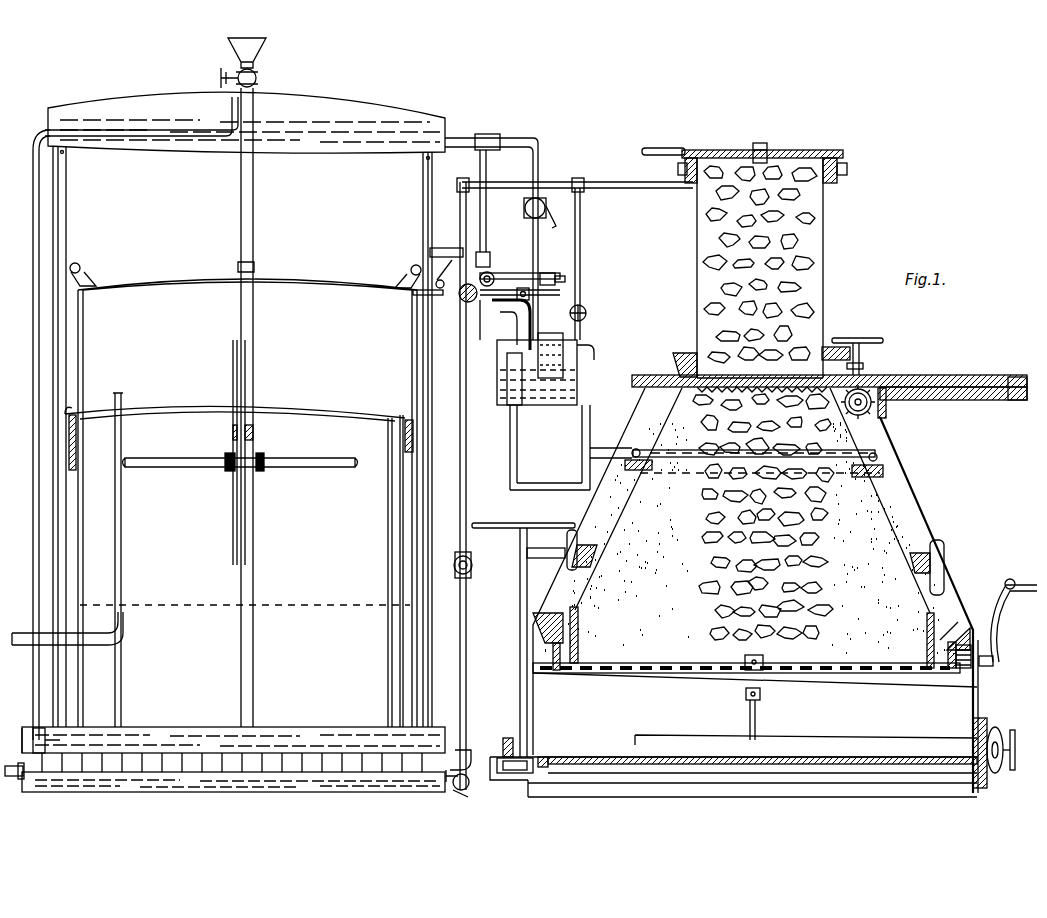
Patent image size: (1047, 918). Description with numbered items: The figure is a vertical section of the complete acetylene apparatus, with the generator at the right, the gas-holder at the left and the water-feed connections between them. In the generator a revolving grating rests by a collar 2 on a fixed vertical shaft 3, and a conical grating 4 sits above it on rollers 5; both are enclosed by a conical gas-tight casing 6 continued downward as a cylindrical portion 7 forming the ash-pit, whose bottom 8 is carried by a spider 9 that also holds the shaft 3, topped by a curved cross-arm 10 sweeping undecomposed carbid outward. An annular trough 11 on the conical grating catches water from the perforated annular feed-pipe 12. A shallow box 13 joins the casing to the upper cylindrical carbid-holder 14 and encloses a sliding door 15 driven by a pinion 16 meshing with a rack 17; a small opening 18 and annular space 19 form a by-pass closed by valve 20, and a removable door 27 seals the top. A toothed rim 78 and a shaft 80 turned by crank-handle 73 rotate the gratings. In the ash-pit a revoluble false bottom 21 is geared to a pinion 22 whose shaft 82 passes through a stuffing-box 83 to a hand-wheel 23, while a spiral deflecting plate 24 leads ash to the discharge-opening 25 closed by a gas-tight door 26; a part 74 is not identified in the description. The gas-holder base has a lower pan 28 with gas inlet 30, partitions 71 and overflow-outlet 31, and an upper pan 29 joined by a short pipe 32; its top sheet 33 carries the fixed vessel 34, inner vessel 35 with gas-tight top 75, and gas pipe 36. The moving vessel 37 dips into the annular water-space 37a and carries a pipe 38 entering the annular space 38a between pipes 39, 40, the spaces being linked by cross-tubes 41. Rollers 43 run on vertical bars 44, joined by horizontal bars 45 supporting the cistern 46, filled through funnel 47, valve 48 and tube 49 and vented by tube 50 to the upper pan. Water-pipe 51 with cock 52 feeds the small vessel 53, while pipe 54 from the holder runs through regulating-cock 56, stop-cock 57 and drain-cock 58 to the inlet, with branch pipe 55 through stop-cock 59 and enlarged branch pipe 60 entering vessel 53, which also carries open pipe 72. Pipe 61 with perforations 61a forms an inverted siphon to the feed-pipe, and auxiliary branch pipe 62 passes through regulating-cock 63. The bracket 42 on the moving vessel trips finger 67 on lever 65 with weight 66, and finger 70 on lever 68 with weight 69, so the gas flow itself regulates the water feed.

The collar 2 is at (745, 694).
The fixed vertical shaft 3 is at (757, 712).
The conical grating 4 is at (607, 535).
The rollers 5 is at (566, 565).
The conical gas-tight casing 6 is at (922, 512).
The cylindrical casing portion 7 is at (980, 690).
The ash-pit bottom 8 is at (560, 775).
The spider 9 is at (645, 796).
The curved cross-arm 10 is at (810, 673).
The annular trough 11 is at (630, 470).
The annular feed-pipe 12 is at (880, 456).
The shallow box 13 is at (935, 396).
The upper cylindrical carbid-holder 14 is at (823, 245).
The sliding horizontal trap or door 15 is at (690, 382).
The pinion 16 is at (843, 155).
The rack 17 is at (548, 670).
The small opening 18 is at (865, 367).
The annular space 19 is at (680, 368).
The by-pass valve 20 is at (862, 353).
The revoluble false bottom 21 is at (596, 765).
The toothed pinion 22 is at (510, 775).
The hand-wheel 23 is at (555, 527).
The deflecting or discharging plate 24 is at (825, 744).
The discharge-opening 25 is at (986, 727).
The gas-tight removable door 26 is at (997, 776).
The removable door 27 is at (770, 149).
The lower shallow pan 28 is at (188, 780).
The upper shallow pan 29 is at (155, 736).
The gas inlet 30 is at (470, 756).
The overflow-outlet 31 is at (15, 778).
The short pipe 32 is at (62, 736).
The top sheet 33 is at (312, 735).
The cylindrical vessel 34 is at (70, 410).
The inner vessel 35 is at (82, 513).
The gas-conduit pipe 36 is at (388, 682).
The moving cylindrical vessel 37 is at (83, 345).
The annular water-space 37a is at (78, 625).
The vertical pipe 38 is at (253, 345).
The annular space 38a is at (232, 582).
The inner pipe 39 is at (242, 584).
The outer pipe 40 is at (253, 633).
The cross-tubes 41 is at (152, 464).
The arm or bracket 42 is at (412, 272).
The rollers 43 is at (83, 282).
The vertical bars or posts 44 is at (67, 215).
The horizontal bars 45 is at (173, 152).
The water-storage tank or cistern 46 is at (310, 106).
The funnel 47 is at (262, 42).
The valve 48 is at (257, 78).
The tube 49 is at (254, 107).
The tube 50 is at (33, 548).
The water-pipe 51 is at (510, 138).
The cock 52 is at (542, 200).
The small closed vessel 53 is at (530, 406).
The pipe 54 is at (477, 594).
The branch pipe 55 is at (580, 222).
The regulating-cock 56 is at (462, 302).
The stop-cock 57 is at (476, 563).
The drain-cock 58 is at (468, 790).
The stop-cock 59 is at (588, 313).
The branch pipe 60 is at (505, 360).
The small pipe 61 is at (517, 470).
The small perforations 61a is at (510, 378).
The branch pipe 62 is at (487, 232).
The regulating-cock 63 is at (490, 268).
The cross-lever 65 is at (460, 288).
The weight 66 is at (530, 296).
The tripping-finger 67 is at (413, 294).
The lever 68 is at (513, 280).
The weight 69 is at (552, 269).
The tripping-finger 70 is at (446, 260).
The vertical partitions 71 is at (312, 780).
The short pipe 72 is at (550, 336).
The crank-handle 73 is at (1003, 608).
The support 74 is at (539, 768).
The gas-tight top 75 is at (285, 407).
The outwardly-projecting rim 78 is at (960, 630).
The shaft 80 is at (987, 666).
The shaft 82 is at (520, 635).
The gas-tight stuffing-box 83 is at (508, 740).